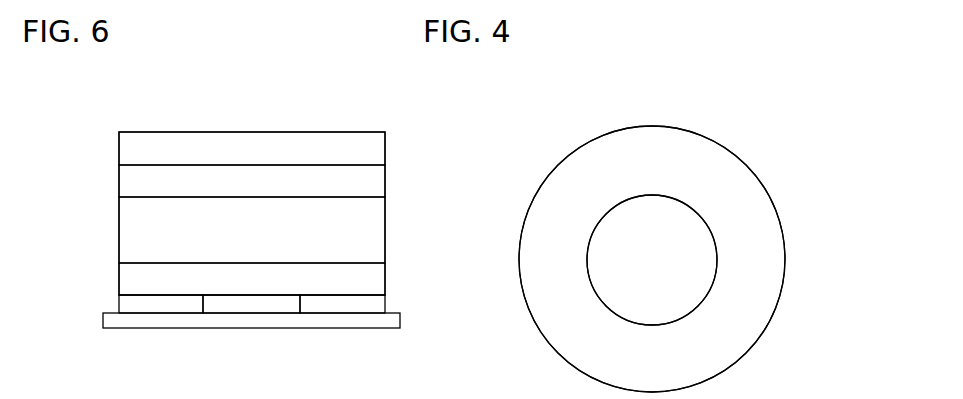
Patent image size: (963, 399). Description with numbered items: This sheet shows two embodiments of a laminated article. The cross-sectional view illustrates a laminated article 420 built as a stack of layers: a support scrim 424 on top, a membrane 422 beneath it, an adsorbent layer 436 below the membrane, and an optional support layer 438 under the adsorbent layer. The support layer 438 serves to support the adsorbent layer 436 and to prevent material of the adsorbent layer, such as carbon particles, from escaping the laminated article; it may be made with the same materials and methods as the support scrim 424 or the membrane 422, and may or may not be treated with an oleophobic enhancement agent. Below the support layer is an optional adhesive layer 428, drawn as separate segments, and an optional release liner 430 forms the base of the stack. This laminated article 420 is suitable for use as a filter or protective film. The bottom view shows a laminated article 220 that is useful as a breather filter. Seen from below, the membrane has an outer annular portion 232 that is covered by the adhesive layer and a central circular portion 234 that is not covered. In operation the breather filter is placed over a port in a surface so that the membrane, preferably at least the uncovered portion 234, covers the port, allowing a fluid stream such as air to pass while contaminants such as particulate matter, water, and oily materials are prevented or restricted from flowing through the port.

In FIG. 6, the laminated article 420 is at (212, 102).
In FIG. 6, the support scrim 424 is at (385, 145).
In FIG. 6, the membrane 422 is at (385, 185).
In FIG. 6, the adsorbent layer 436 is at (385, 228).
In FIG. 6, the support layer 438 is at (385, 275).
In FIG. 6, the adhesive layer 428 is at (385, 302).
In FIG. 6, the release liner 430 is at (400, 321).
In FIG. 4, the laminated article 220 is at (607, 100).
In FIG. 4, the portion of the membrane covered by the adhesive layer 232 is at (742, 181).
In FIG. 4, the portion of the membrane not covered by the adhesive layer 234 is at (700, 261).